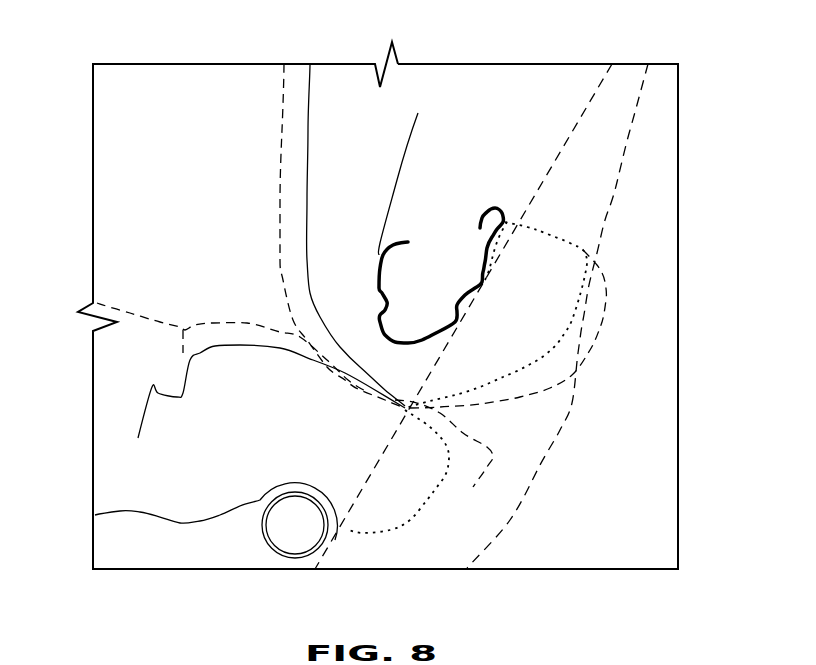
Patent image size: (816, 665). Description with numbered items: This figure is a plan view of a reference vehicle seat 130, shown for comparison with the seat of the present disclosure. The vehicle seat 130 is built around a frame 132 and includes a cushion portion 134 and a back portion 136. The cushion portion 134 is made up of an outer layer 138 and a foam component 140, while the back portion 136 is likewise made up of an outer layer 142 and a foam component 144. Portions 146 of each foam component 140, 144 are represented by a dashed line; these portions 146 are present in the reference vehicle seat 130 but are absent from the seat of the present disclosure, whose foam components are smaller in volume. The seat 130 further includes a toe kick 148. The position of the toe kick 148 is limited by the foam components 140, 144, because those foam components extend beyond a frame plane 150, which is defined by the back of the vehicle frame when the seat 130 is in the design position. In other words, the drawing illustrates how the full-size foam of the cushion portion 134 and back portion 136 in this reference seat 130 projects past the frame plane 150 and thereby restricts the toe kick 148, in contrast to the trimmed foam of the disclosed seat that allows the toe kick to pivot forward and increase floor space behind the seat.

The vehicle seat 130 is at (714, 47).
The frame 132 is at (488, 207).
The cushion portion 134 is at (143, 462).
The back portion 136 is at (465, 97).
The outer layer 138 is at (130, 303).
The foam component 140 is at (158, 498).
The outer layer 142 is at (278, 120).
The foam component 144 is at (333, 175).
The portions 146 is at (555, 245).
The toe kick 148 is at (585, 372).
The frame plane 150 is at (573, 132).